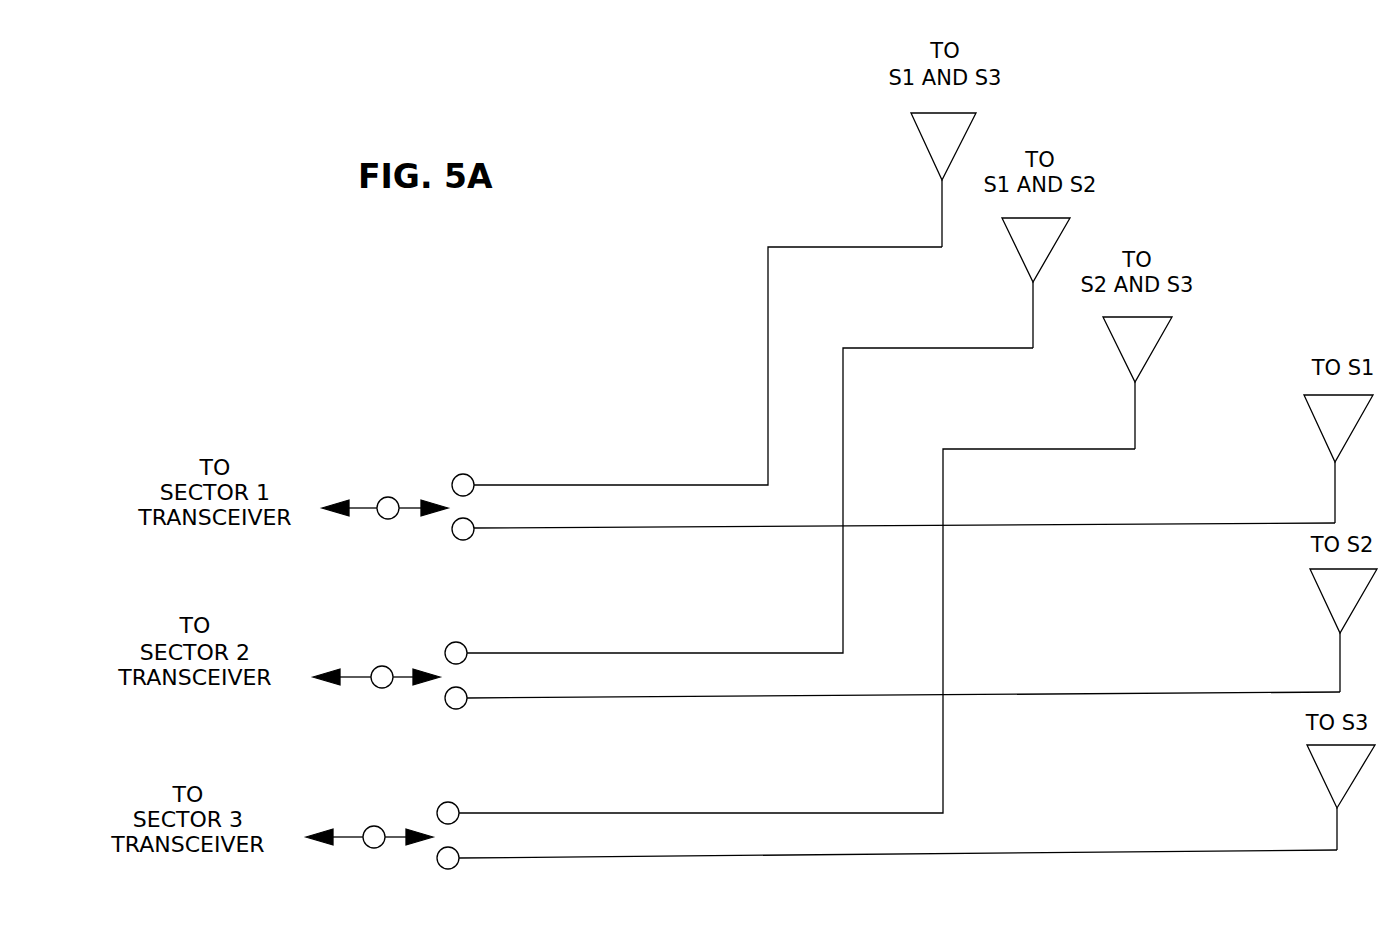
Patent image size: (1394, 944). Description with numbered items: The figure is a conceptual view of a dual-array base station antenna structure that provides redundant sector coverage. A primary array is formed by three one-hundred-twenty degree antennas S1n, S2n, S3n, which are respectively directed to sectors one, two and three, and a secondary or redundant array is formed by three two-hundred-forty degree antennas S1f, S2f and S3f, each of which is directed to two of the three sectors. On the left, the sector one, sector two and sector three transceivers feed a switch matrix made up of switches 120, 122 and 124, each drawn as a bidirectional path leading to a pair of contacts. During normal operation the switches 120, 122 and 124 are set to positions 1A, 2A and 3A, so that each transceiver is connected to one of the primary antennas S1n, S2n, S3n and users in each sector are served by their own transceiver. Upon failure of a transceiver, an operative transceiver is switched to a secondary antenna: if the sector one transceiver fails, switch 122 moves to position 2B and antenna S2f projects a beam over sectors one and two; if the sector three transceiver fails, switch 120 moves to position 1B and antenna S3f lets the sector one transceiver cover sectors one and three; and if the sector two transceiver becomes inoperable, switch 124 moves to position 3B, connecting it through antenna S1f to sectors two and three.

The switch 120 is at (421, 516).
The switch 122 is at (413, 683).
The switch 124 is at (406, 842).
The switch position 1A is at (472, 537).
The switch position 1B is at (470, 477).
The switch position 2A is at (465, 706).
The switch position 2B is at (463, 645).
The switch position 3A is at (457, 866).
The switch position 3B is at (455, 805).
The 240 degree antenna S3f is at (924, 141).
The 240 degree antenna S2f is at (1016, 247).
The 240 degree antenna S1f is at (1117, 348).
The 120 degree antenna S1n is at (1322, 438).
The 120 degree antenna S2n is at (1323, 598).
The 120 degree antenna S3n is at (1320, 775).